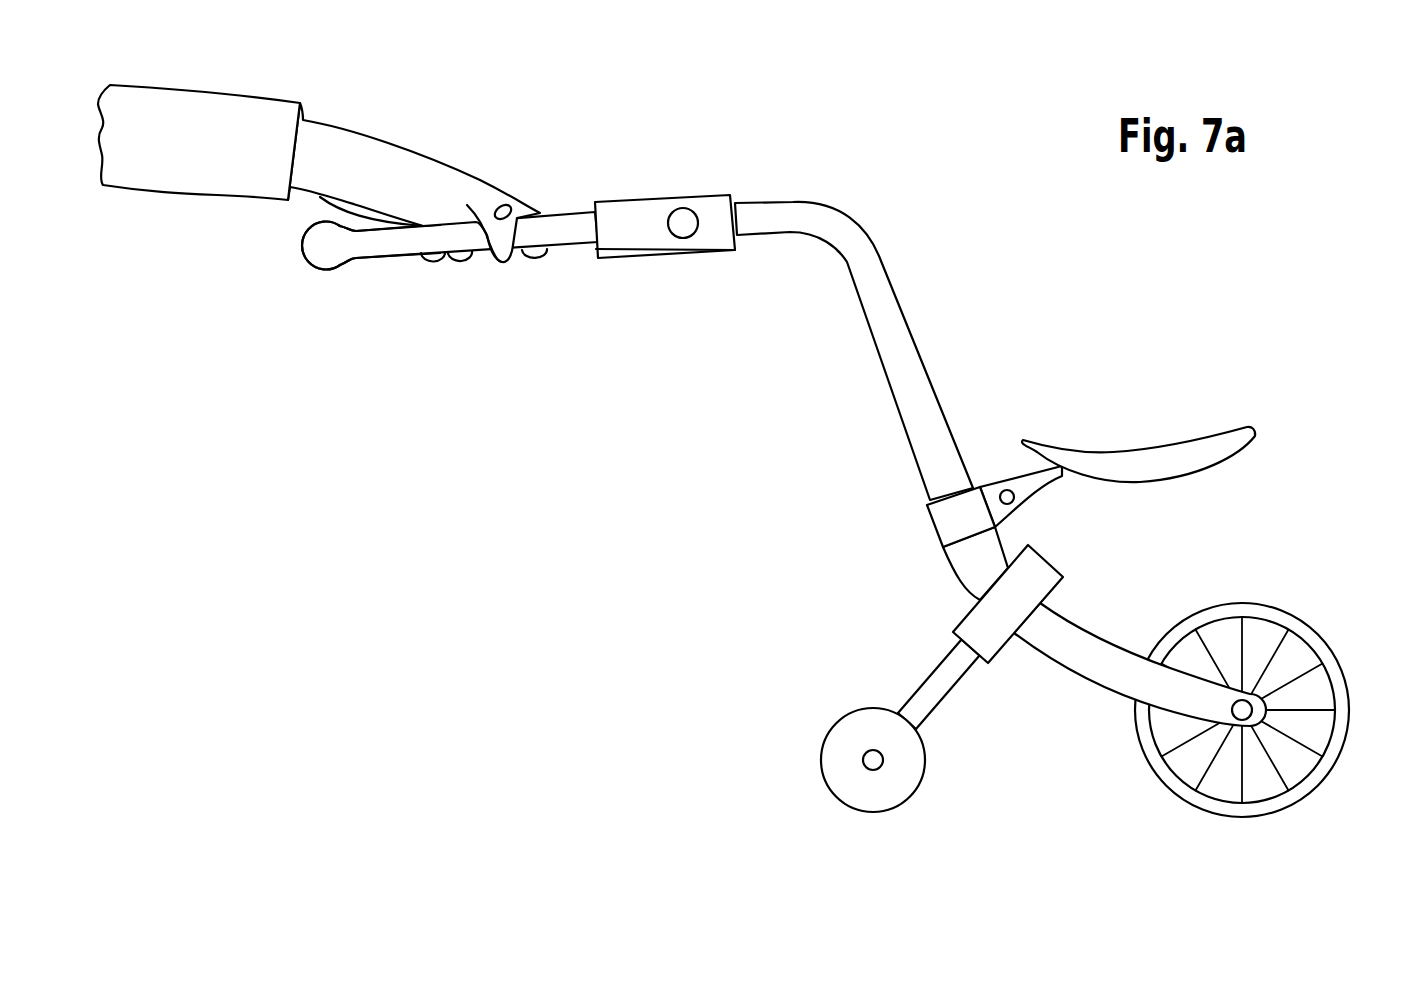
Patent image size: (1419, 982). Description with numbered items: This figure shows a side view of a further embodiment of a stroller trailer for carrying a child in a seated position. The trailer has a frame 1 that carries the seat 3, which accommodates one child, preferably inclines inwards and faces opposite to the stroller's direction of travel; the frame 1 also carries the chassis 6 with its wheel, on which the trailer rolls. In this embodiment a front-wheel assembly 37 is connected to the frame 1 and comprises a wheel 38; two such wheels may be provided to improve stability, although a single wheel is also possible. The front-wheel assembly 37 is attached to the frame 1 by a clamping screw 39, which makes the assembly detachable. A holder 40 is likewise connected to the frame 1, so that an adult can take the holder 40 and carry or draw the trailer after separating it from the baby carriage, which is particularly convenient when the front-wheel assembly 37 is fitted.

The frame 1 is at (845, 243).
The seat 3 is at (1213, 453).
The chassis 6 is at (1338, 693).
The front-wheel assembly 37 is at (983, 718).
The wheel 38 is at (882, 788).
The clamping screw 39 is at (972, 602).
The holder 40 is at (328, 247).